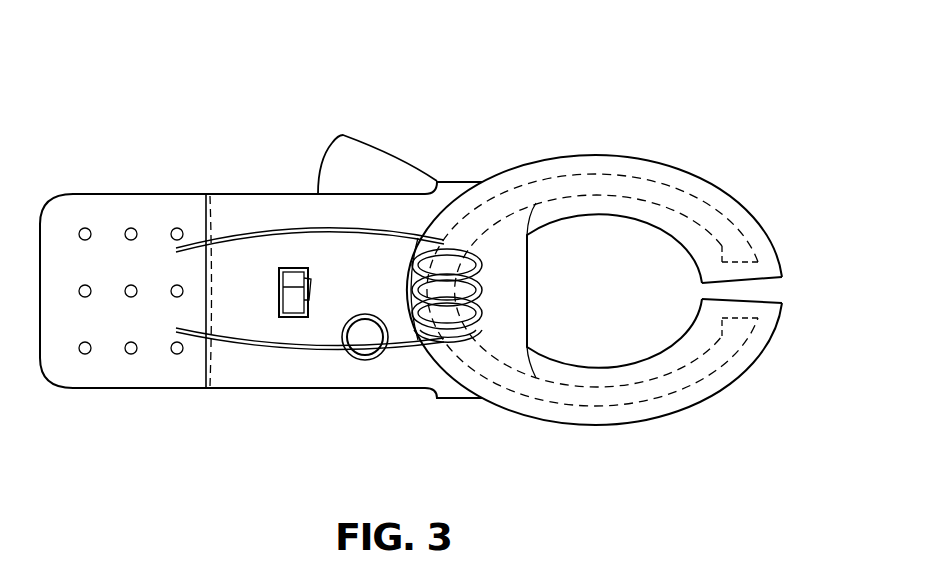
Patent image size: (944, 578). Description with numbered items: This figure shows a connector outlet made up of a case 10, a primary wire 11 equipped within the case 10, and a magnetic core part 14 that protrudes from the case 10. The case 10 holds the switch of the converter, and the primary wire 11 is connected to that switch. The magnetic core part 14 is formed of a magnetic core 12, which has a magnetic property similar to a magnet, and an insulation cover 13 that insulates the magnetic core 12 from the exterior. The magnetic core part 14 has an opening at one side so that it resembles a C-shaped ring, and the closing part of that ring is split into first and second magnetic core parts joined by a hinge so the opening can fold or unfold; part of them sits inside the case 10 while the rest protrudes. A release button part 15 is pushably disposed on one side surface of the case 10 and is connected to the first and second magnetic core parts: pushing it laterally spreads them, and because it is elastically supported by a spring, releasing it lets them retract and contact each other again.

The case 10 is at (52, 384).
The primary wire 11 is at (276, 228).
The magnetic core 12 is at (531, 190).
The insulation cover 13 is at (589, 155).
The magnetic core part 14 is at (594, 223).
The release button part 15 is at (345, 150).